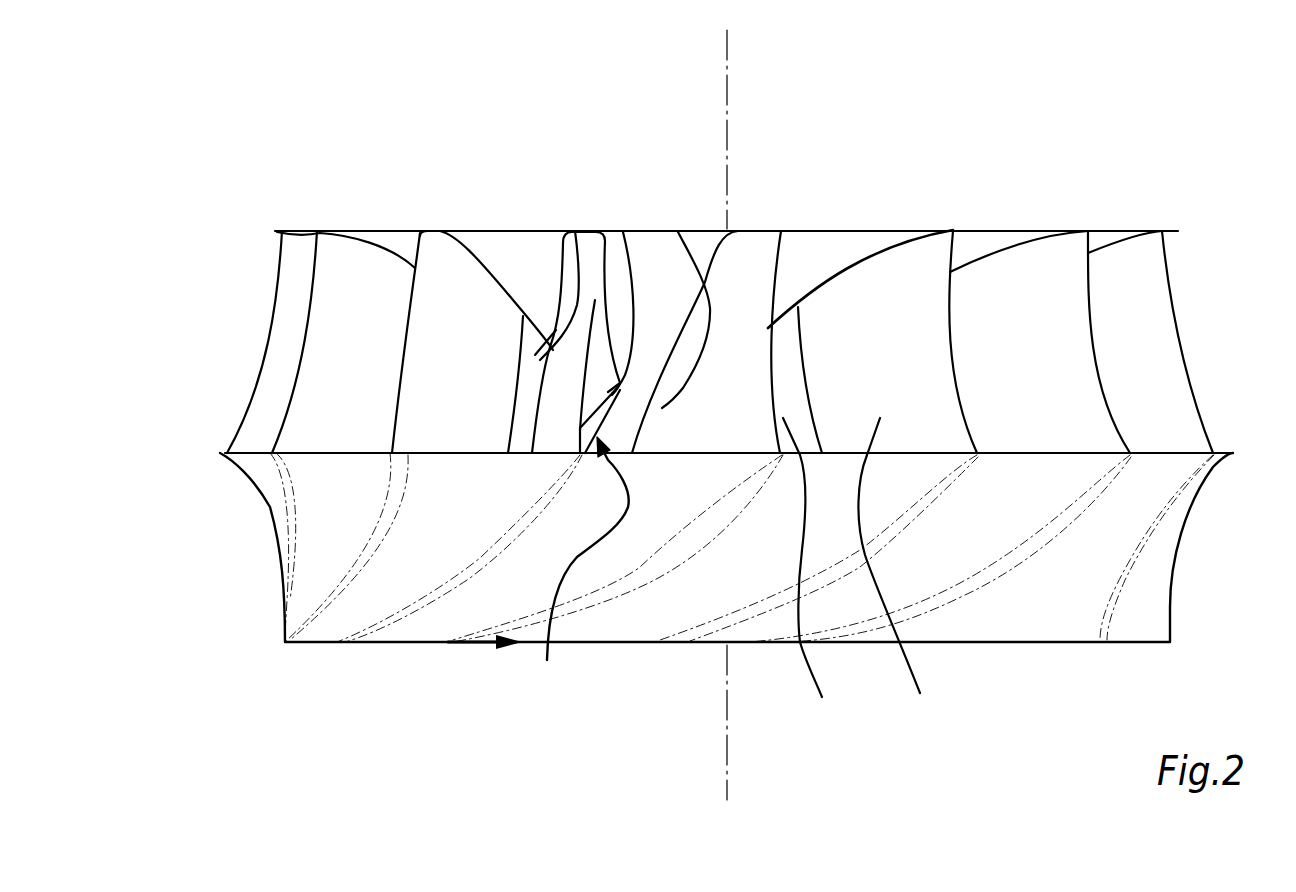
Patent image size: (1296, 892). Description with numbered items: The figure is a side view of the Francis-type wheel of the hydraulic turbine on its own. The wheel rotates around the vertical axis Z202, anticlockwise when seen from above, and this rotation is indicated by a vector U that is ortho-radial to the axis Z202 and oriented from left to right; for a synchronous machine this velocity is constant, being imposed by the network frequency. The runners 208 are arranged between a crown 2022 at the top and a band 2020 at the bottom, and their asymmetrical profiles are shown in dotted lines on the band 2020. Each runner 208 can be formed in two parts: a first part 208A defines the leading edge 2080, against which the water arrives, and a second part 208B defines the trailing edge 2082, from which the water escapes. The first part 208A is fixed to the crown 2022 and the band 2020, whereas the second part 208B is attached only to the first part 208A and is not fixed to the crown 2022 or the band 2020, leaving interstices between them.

The crown 2022 is at (531, 226).
The band 2020 is at (350, 610).
The runners 208 is at (562, 400).
The first part 208A is at (445, 263).
The second part 208B is at (678, 232).
The leading edge 2080 is at (952, 380).
The trailing edge 2082 is at (547, 660).
The axis Z202 is at (753, 415).